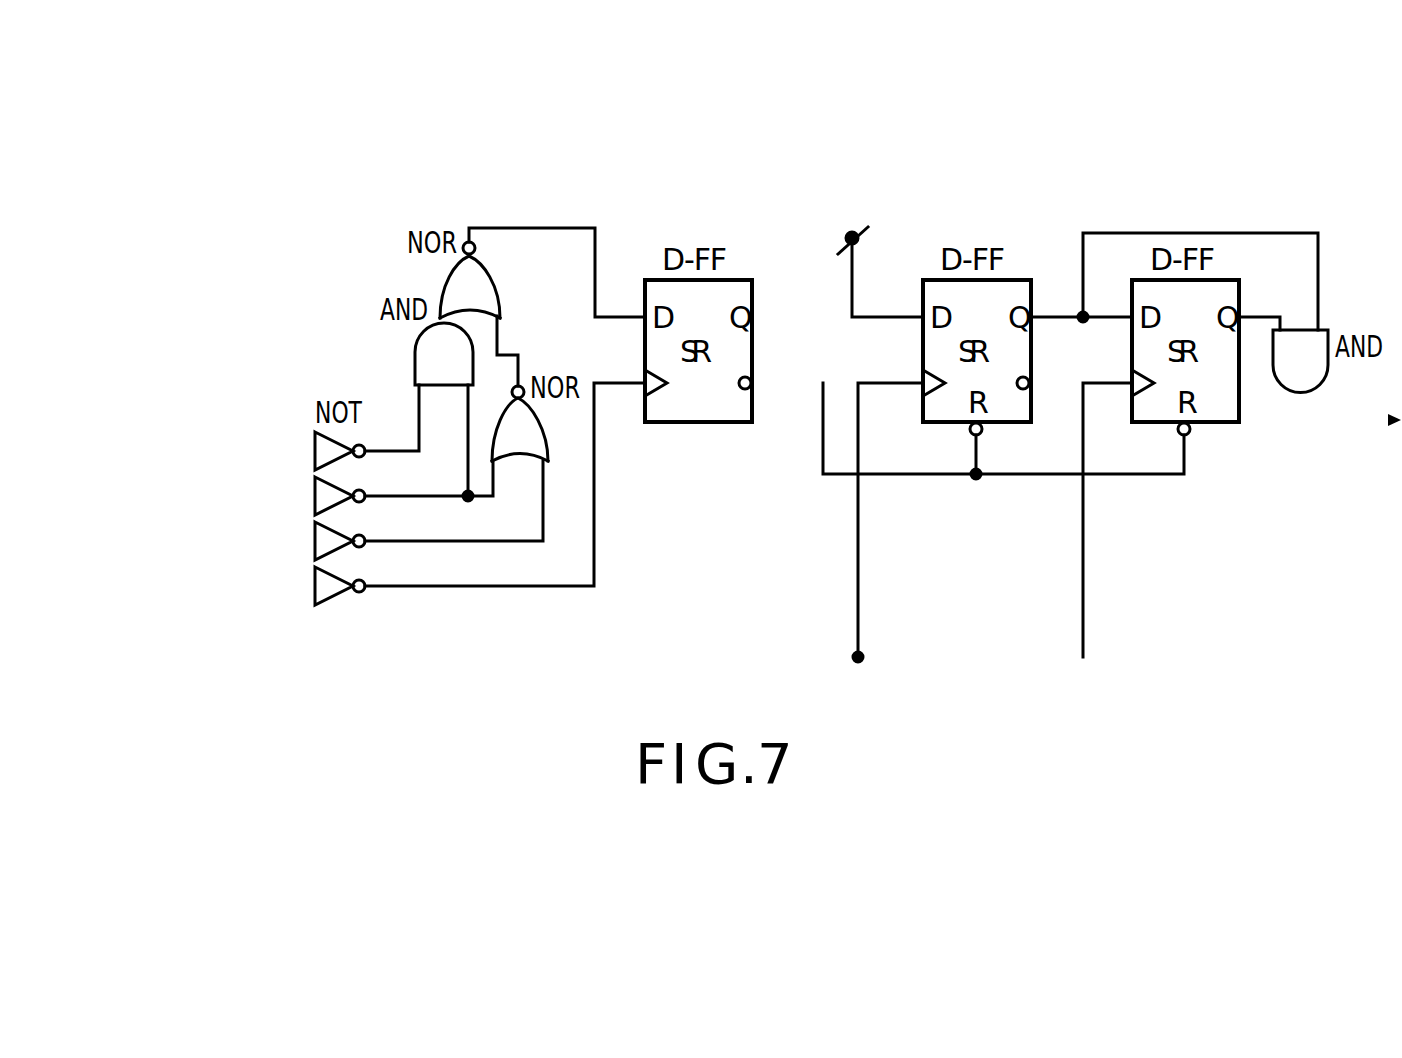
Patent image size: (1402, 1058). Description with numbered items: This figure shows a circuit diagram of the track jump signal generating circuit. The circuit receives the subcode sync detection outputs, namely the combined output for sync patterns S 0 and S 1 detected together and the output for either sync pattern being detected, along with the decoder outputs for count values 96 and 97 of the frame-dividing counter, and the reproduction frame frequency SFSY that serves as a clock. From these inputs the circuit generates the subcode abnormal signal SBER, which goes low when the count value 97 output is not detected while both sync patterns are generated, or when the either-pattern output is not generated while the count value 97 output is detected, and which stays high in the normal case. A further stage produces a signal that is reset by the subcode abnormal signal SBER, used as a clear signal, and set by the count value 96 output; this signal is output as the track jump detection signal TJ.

The DET96 detection signal 96 is at (1083, 657).
The DET97 detection signal 97 is at (315, 496).
The S0·S1 signal 0 is at (315, 451).
The S0+S1 signal 1 is at (315, 541).
The reproduction frame frequency SFSY is at (315, 586).
The subcode abnormal signal SBER is at (823, 383).
The track jump detection signal TJ is at (1392, 420).